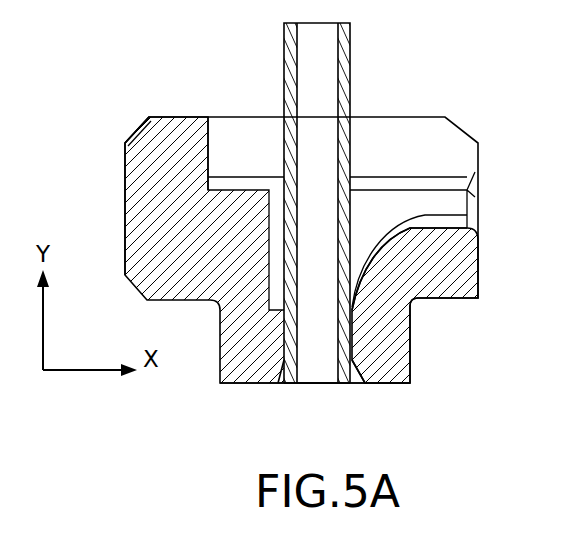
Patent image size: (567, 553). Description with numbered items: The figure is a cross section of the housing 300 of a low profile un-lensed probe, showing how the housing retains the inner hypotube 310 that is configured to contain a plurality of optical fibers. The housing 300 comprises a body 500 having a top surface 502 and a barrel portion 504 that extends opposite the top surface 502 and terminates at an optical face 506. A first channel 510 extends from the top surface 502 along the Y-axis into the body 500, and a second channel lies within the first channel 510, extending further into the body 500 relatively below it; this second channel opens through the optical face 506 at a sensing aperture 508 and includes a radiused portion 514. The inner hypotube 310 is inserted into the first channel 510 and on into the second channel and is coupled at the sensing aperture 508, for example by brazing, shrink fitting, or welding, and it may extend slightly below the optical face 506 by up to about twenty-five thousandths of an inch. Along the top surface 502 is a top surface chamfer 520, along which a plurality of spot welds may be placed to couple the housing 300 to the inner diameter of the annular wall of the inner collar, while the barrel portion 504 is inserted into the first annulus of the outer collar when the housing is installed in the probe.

The housing 300 is at (238, 76).
The inner hypotube 310 is at (341, 62).
The body 500 is at (213, 250).
The top surface 502 is at (178, 128).
The barrel portion 504 is at (398, 343).
The optical face 506 is at (380, 383).
The sensing aperture 508 is at (310, 384).
The first channel 510 is at (392, 389).
The radiused portion 514 is at (397, 237).
The top surface chamfer 520 is at (127, 140).